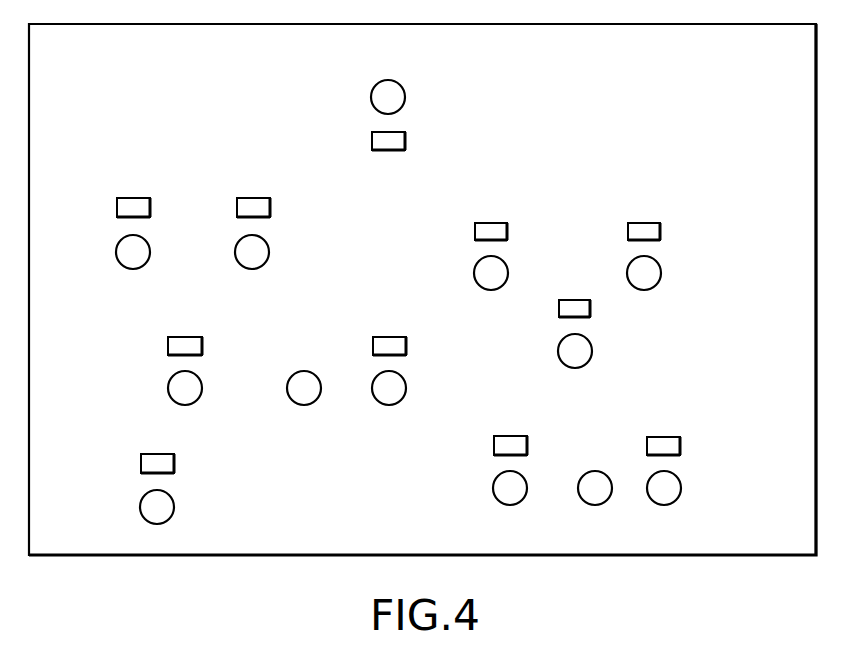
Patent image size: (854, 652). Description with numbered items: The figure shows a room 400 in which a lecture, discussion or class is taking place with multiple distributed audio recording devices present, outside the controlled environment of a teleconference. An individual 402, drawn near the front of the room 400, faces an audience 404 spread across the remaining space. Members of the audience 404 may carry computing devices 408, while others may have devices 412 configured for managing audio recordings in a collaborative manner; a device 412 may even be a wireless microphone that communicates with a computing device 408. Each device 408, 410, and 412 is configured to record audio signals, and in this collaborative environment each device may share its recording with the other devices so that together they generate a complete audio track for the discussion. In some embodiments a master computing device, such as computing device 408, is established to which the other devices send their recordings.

The room 400 is at (721, 60).
The individual 402 is at (405, 92).
The audience 404 is at (230, 110).
The computing device 408 is at (405, 141).
The device 410 is at (270, 208).
The device 412 is at (202, 343).